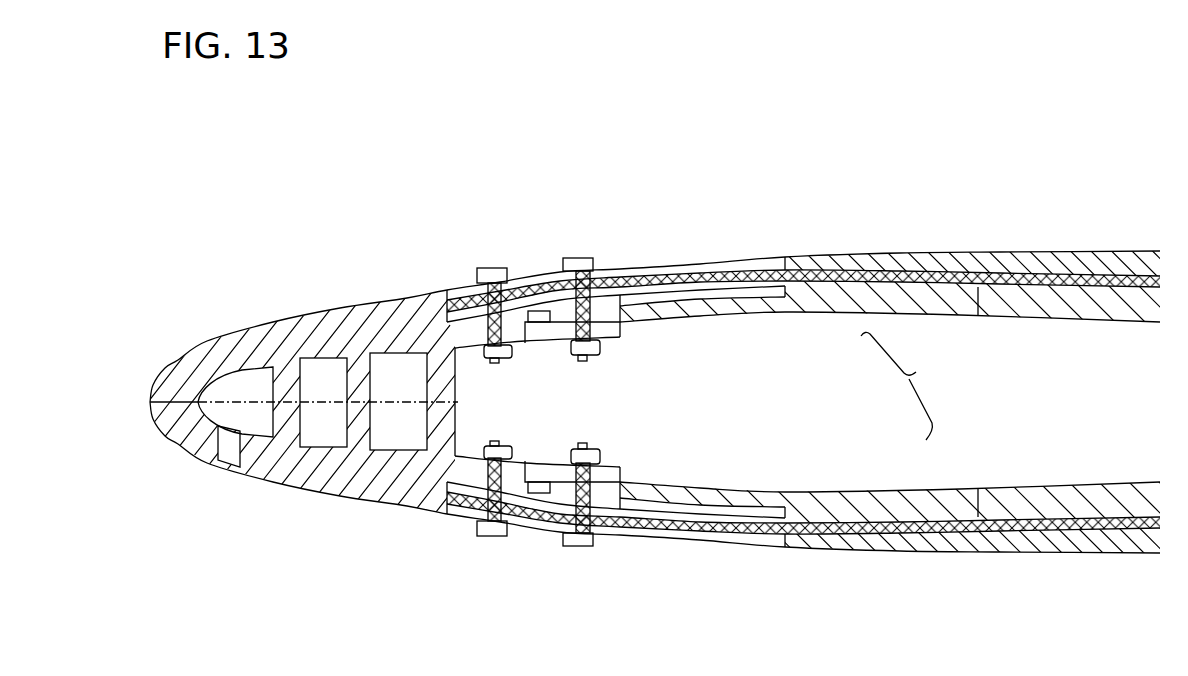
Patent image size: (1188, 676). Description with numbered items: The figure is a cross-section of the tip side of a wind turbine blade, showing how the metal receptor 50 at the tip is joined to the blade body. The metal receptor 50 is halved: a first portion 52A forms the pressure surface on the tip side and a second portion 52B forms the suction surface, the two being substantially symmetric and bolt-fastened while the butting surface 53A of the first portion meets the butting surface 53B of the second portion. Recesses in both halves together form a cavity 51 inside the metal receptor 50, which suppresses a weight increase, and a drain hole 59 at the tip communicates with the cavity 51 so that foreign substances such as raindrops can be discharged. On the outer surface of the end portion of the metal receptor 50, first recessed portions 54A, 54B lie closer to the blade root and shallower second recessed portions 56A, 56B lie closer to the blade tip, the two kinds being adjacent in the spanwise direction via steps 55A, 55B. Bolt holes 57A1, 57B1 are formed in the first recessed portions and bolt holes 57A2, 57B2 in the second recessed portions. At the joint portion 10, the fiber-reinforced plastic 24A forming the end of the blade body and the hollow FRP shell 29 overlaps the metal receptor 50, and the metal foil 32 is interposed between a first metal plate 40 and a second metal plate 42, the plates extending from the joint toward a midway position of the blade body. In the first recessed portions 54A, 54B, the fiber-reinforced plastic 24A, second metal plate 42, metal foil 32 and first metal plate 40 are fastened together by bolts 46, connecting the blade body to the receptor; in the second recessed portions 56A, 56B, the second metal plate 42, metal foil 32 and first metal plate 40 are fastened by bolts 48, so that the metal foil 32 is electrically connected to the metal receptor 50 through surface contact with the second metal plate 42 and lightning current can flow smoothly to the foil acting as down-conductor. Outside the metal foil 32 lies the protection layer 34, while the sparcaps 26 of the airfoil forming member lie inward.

The joint portion 10 is at (622, 231).
The fiber-reinforced plastic 24A is at (836, 315).
The sparcaps 26 is at (1064, 318).
The FRP shell 29 is at (904, 386).
The metal foil 32 is at (950, 253).
The protection layer 34 is at (868, 270).
The first metal plate 40 is at (632, 262).
The second metal plate 42 is at (718, 258).
The bolts 46 is at (578, 257).
The bolts 48 is at (493, 268).
The metal receptor 50 is at (370, 302).
The cavity 51 is at (228, 390).
The first portion 52A is at (248, 330).
The second portion 52B is at (262, 477).
The butting surface 53A is at (160, 413).
The butting surface 53B is at (193, 411).
The first recessed portion 54A is at (630, 336).
The first recessed portion 54B is at (630, 468).
The step 55A is at (553, 338).
The step 55B is at (553, 466).
The second recessed portion 56A is at (455, 288).
The second recessed portion 56B is at (458, 518).
The bolt hole 57A1 is at (600, 352).
The bolt hole 57A2 is at (497, 360).
The bolt hole 57B1 is at (600, 452).
The bolt hole 57B2 is at (503, 416).
The drain hole 59 is at (229, 468).